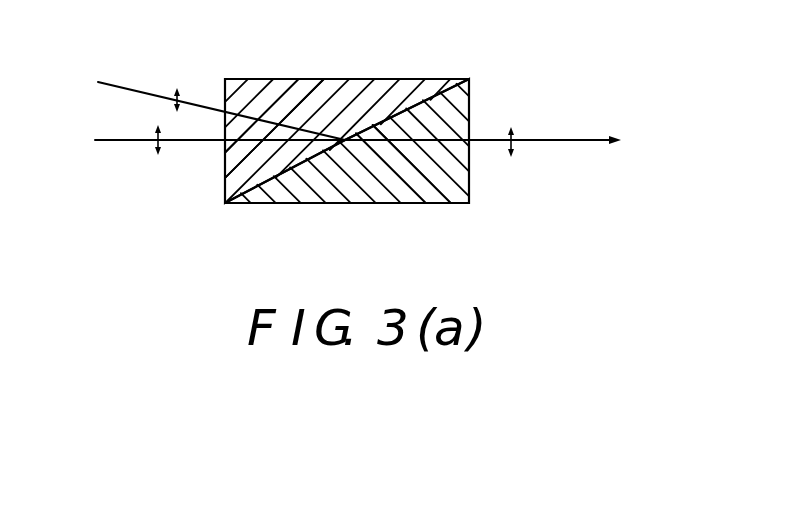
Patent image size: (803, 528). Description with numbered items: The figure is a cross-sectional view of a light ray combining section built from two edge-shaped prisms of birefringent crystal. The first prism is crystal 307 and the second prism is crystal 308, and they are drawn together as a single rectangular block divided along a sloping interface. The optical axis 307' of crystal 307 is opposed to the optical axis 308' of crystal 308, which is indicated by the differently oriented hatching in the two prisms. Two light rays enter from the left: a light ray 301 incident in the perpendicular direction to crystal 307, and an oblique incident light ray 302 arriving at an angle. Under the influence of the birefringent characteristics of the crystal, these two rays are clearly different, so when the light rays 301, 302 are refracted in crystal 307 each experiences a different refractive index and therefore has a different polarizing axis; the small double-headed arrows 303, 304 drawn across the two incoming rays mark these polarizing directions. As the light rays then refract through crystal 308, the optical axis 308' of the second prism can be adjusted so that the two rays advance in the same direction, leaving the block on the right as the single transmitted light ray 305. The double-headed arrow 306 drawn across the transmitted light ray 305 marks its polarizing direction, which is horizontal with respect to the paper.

The light ray 301 is at (108, 139).
The oblique incident light ray 302 is at (117, 83).
The polarization direction of beam 301 303 is at (158, 152).
The polarization direction of beam 302 304 is at (176, 90).
The transmitted light ray 305 is at (593, 124).
The polarization direction of output beam 306 is at (513, 154).
The crystal 307 is at (347, 115).
The optical axis 307' is at (276, 104).
The crystal 308 is at (347, 168).
The optical axis 308' is at (403, 191).